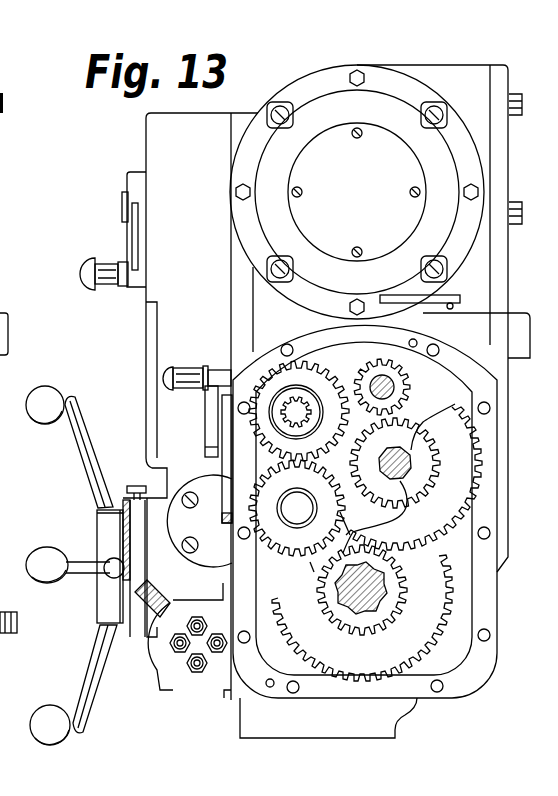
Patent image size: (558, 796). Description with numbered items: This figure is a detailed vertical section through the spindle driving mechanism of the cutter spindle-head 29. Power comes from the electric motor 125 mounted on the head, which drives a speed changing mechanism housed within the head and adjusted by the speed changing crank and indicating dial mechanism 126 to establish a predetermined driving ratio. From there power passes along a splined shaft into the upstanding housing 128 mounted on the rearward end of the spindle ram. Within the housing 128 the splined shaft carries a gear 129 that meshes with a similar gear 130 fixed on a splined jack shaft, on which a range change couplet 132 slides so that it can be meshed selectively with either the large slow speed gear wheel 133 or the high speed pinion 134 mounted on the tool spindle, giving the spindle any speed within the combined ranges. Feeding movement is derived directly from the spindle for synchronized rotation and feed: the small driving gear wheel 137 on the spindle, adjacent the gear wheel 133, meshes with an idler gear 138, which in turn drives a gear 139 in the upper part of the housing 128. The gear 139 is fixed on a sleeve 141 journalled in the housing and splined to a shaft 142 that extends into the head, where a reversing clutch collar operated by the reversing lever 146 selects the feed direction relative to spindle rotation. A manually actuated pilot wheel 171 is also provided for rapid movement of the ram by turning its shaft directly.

The cutter spindle-head 29 is at (155, 127).
The electric motor 125 is at (390, 100).
The speed changing crank and indicating dial mechanism 126 is at (80, 273).
The reversing lever 146 is at (186, 367).
The pilot wheel 171 is at (44, 386).
The upstanding housing 128 is at (486, 594).
The range change couplet 132 is at (457, 454).
The gear 139 is at (318, 376).
The sleeve 141 is at (275, 437).
The shaft 142 is at (289, 400).
The gear 129 is at (404, 378).
The gear 130 is at (420, 414).
The idler gear 138 is at (260, 517).
The high speed pinion 134 is at (362, 628).
The large slow speed gear wheel 133 is at (316, 588).
The small driving gear wheel 137 is at (310, 567).